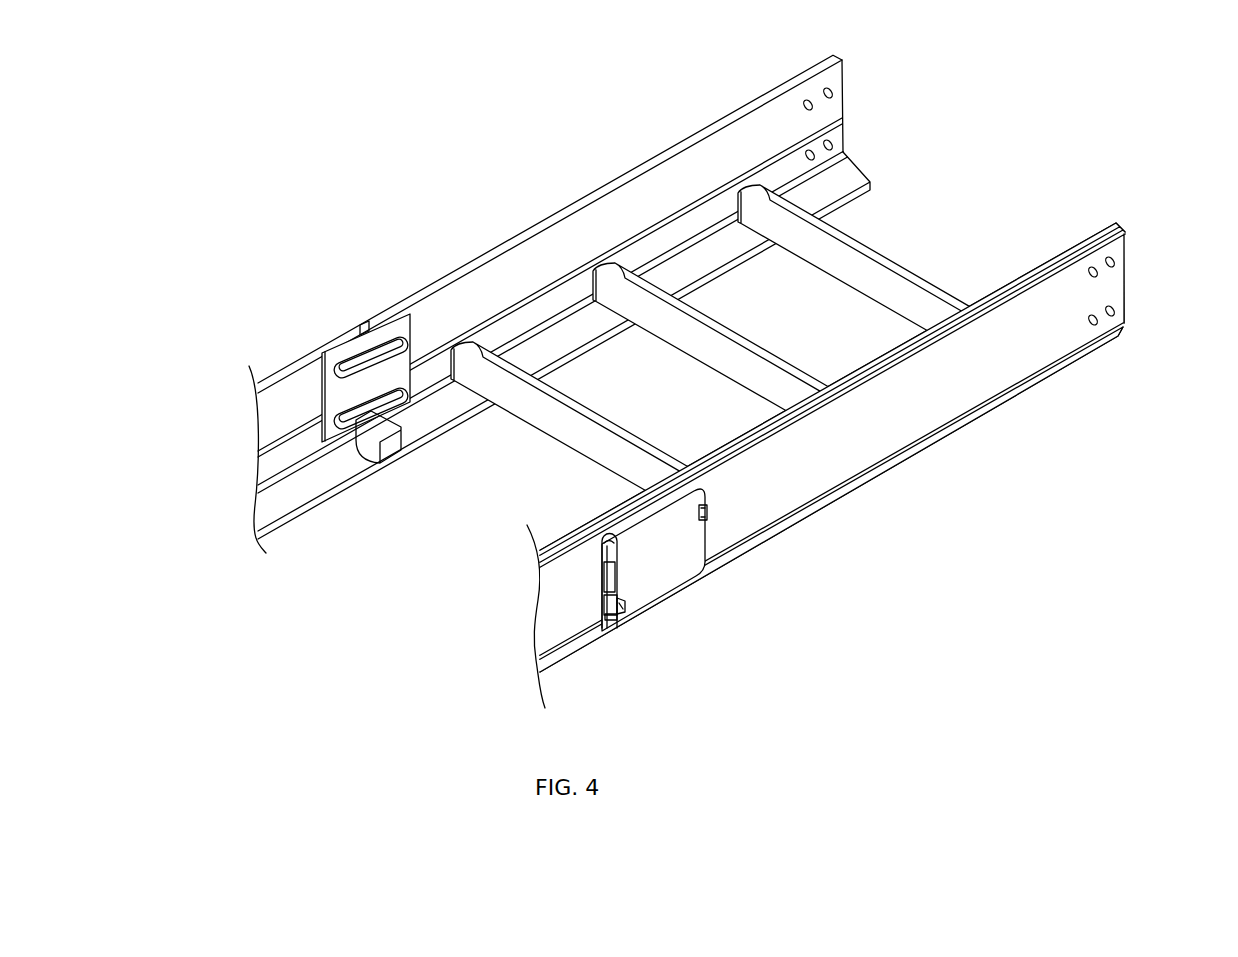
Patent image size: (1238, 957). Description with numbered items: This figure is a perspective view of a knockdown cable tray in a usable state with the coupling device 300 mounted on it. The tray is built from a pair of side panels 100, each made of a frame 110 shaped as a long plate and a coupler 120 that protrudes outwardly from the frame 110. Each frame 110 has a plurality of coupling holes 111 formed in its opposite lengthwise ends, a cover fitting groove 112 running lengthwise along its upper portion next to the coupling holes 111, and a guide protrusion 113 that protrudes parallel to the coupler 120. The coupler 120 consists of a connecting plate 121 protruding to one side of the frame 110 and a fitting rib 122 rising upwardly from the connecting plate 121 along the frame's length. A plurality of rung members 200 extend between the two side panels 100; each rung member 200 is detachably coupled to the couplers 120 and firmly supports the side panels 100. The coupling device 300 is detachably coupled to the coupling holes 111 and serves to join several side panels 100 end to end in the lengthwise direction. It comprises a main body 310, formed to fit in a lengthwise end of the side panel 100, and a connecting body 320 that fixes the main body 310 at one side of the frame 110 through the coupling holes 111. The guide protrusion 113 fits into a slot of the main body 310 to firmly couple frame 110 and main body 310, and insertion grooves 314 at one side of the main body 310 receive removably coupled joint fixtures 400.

The side panel 100 is at (653, 379).
The frame 110 is at (696, 373).
The coupling hole 111 is at (833, 93).
The cover fitting groove 112 is at (1125, 241).
The guide protrusion 113 is at (671, 222).
The coupler 120 is at (567, 304).
The connecting plate 121 is at (858, 179).
The fitting rib 122 is at (844, 157).
The rung member 200 is at (906, 285).
The coupling device 300 is at (563, 477).
The main body 310 is at (563, 477).
The insertion groove 314 is at (610, 578).
The connecting body 320 is at (356, 426).
The joint fixture 400 is at (609, 622).